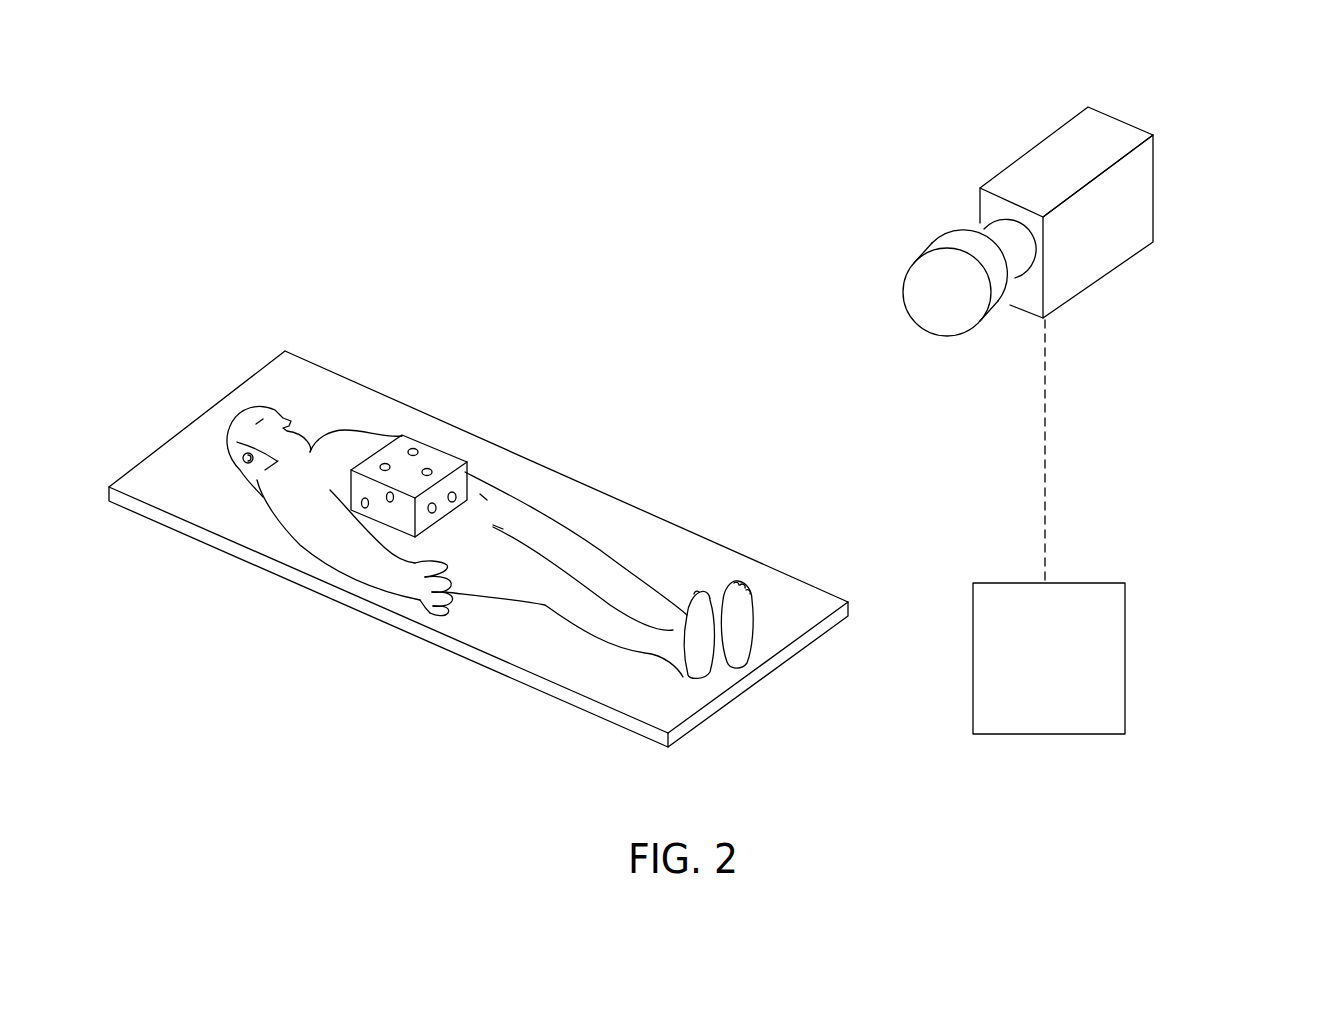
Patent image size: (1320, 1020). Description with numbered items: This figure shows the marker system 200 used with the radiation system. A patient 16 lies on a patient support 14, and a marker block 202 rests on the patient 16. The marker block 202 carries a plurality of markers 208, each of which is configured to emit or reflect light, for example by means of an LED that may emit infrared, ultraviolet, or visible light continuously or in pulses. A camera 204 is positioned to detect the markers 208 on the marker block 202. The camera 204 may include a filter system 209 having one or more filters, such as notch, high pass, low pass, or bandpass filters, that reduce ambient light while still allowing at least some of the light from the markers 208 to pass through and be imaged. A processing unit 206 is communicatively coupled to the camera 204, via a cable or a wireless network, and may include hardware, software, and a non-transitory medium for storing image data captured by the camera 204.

The patient support 14 is at (548, 693).
The patient 16 is at (625, 582).
The marker system 200 is at (1203, 110).
The marker block 202 is at (400, 433).
The camera 204 is at (1153, 190).
The processing unit 206 is at (1028, 670).
The marker 208 is at (428, 468).
The filter system 209 is at (938, 235).